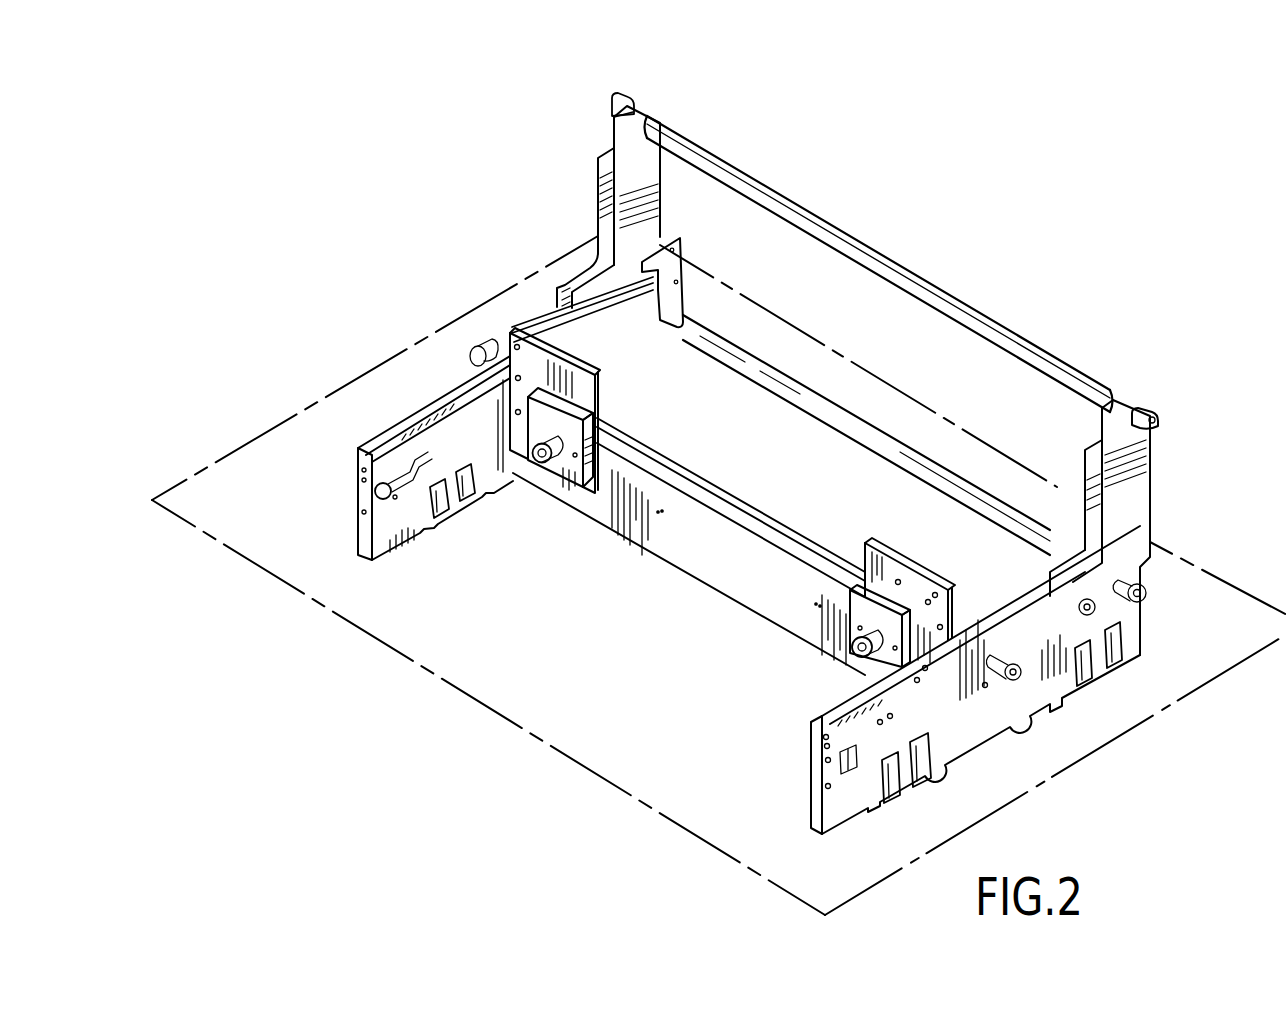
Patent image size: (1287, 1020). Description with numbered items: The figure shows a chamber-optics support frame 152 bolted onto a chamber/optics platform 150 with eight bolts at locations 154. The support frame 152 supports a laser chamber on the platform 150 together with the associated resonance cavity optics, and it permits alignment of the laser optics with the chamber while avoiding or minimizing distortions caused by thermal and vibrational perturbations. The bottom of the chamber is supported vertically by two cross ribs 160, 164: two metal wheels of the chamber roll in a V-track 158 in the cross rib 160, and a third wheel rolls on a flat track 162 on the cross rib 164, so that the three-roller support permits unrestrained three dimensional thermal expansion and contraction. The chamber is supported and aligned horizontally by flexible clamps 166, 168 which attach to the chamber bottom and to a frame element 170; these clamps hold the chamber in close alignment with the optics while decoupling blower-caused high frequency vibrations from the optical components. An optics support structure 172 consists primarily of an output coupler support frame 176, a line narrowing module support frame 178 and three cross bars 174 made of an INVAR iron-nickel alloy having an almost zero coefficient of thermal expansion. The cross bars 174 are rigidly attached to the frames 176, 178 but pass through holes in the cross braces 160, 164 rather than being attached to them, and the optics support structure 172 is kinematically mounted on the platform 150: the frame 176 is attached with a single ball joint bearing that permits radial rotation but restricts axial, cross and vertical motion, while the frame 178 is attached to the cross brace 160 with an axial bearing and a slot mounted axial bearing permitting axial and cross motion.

The chamber/optics platform 150 is at (526, 698).
The chamber-optics support frame 152 is at (1100, 333).
The bolt locations 154 is at (441, 513).
The V-track 158 is at (372, 438).
The cross rib 160 is at (371, 482).
The flat track 162 is at (915, 680).
The cross rib 164 is at (840, 790).
The flexible clamp 166 is at (560, 507).
The flexible clamp 168 is at (812, 653).
The frame element 170 is at (689, 552).
The optics support structure 172 is at (606, 90).
The cross bars 174 is at (903, 257).
The output coupler support frame 176 is at (1135, 482).
The line narrowing module support frame 178 is at (582, 184).